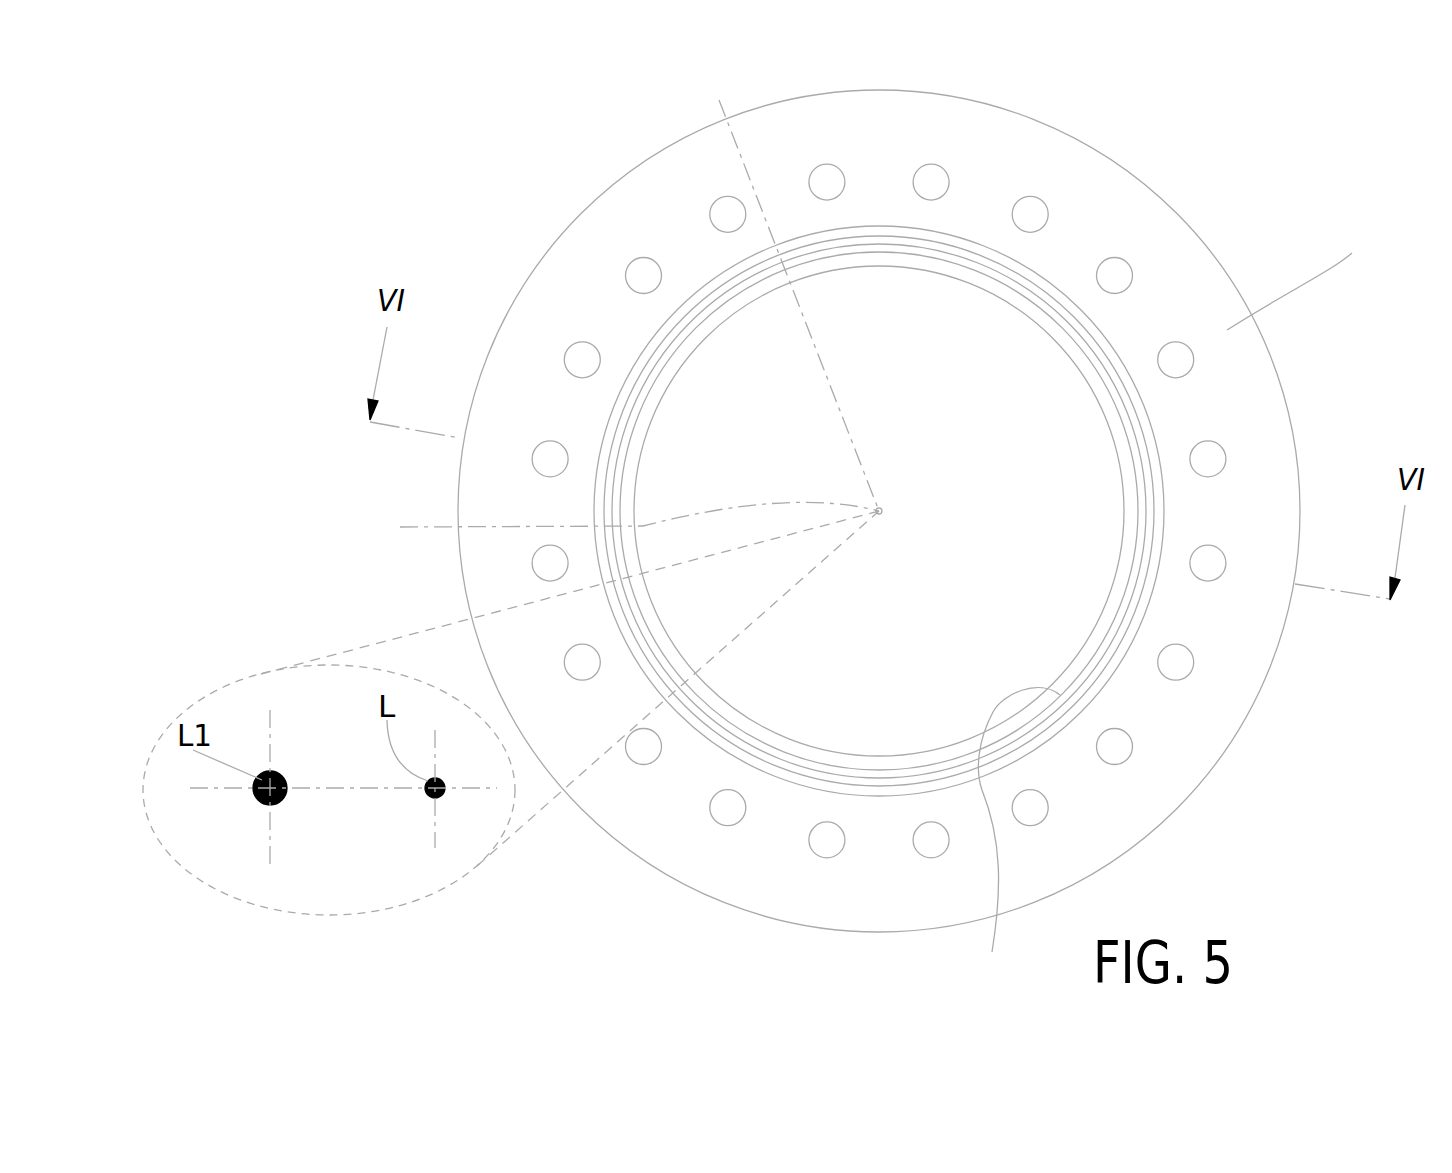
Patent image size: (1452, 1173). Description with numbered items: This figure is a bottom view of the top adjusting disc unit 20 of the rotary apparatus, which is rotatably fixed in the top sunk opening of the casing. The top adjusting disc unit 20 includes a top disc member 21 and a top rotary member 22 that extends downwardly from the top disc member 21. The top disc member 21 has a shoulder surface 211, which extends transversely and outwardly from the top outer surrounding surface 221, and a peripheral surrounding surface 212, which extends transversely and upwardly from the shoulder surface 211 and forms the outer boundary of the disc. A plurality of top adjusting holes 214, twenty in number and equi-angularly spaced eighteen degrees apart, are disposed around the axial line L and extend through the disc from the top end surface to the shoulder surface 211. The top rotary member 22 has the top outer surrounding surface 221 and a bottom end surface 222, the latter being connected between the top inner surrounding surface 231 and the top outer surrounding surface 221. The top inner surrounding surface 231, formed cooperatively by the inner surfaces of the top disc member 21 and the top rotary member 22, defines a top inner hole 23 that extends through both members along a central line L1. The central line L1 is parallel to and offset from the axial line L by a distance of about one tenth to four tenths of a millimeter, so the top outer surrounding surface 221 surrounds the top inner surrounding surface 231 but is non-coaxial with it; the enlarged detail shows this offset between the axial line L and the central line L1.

The top adjusting disc unit 20 is at (942, 524).
The top disc member 21 is at (940, 511).
The shoulder surface 211 is at (1317, 280).
The peripheral surrounding surface 212 is at (1217, 762).
The top adjusting holes 214 is at (1217, 457).
The top rotary member 22 is at (1010, 430).
The top outer surrounding surface 221 is at (1150, 422).
The bottom end surface 222 is at (1142, 585).
The top inner hole 23 is at (825, 625).
The top inner surrounding surface 231 is at (1016, 836).
The axial line L is at (792, 287).
The central line L1 is at (615, 520).